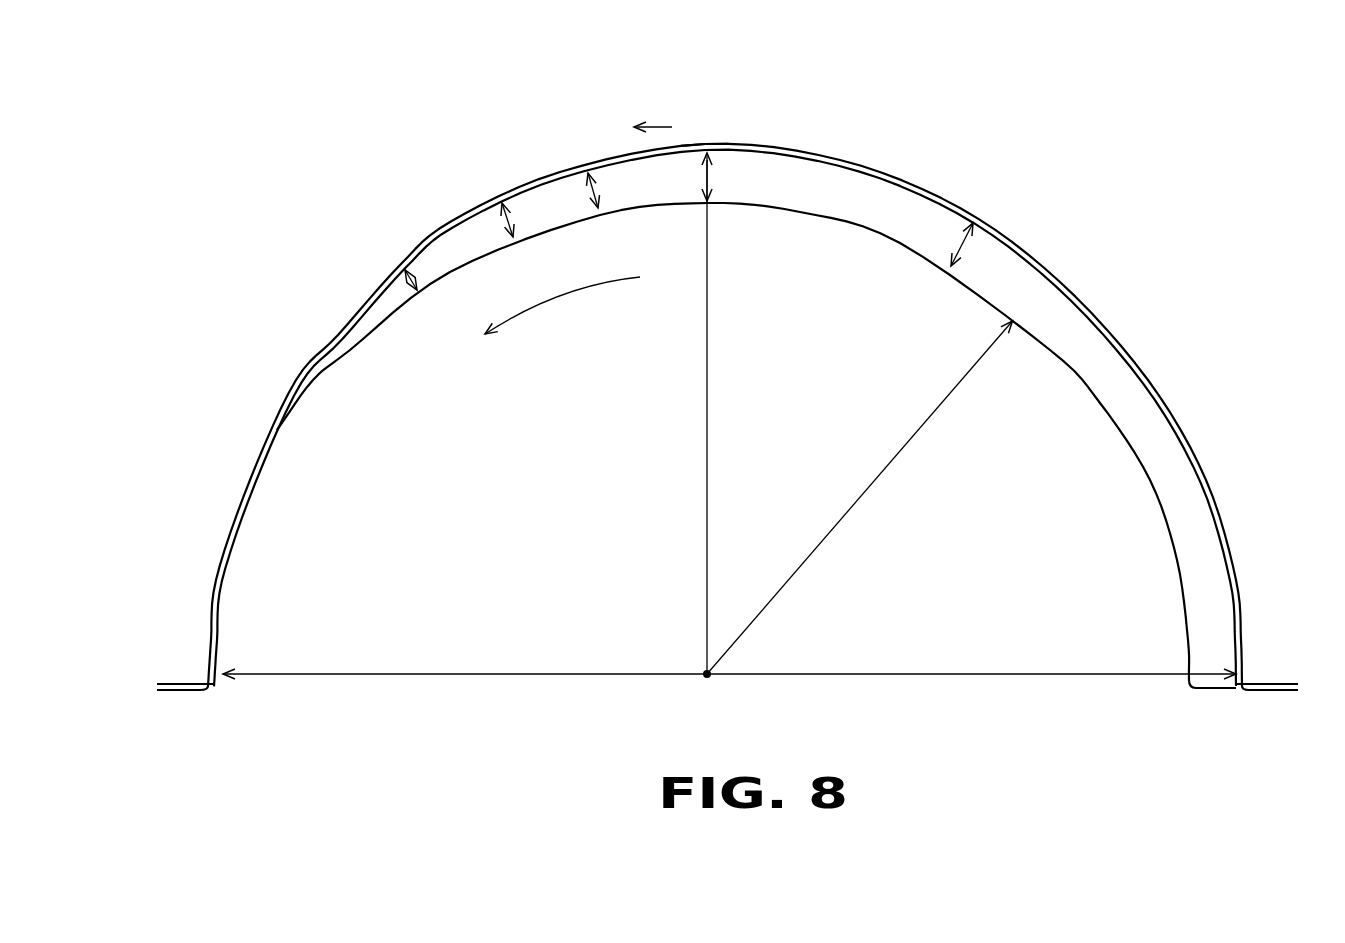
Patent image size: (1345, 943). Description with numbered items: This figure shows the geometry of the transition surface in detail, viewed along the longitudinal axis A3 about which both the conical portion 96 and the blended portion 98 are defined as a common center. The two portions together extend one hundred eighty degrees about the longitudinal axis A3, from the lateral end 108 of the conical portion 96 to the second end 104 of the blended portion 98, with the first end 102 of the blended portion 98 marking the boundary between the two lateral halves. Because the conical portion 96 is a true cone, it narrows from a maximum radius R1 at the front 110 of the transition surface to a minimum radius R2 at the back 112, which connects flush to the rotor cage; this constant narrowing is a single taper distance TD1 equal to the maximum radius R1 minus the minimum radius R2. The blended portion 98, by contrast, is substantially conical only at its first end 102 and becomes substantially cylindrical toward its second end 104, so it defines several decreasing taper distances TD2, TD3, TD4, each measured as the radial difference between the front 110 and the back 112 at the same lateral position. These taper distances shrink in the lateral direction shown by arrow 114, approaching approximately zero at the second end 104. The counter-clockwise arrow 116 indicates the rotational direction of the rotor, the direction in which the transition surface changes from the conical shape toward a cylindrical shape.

The conical portion 96 is at (725, 407).
The blended portion 98 is at (418, 240).
The first end 102 is at (705, 142).
The second end 104 is at (205, 680).
The lateral end 108 is at (1250, 680).
The front 110 is at (915, 181).
The back 112 is at (667, 204).
The arrow 114 is at (658, 123).
The counter-clockwise arrow 116 is at (550, 302).
The taper distance TD1 is at (709, 173).
The taper distance TD2 is at (590, 192).
The taper distance TD3 is at (502, 222).
The taper distance TD4 is at (407, 284).
The maximum radius R1 is at (706, 340).
The minimum radius R2 is at (893, 456).
The longitudinal axis A3 is at (705, 680).